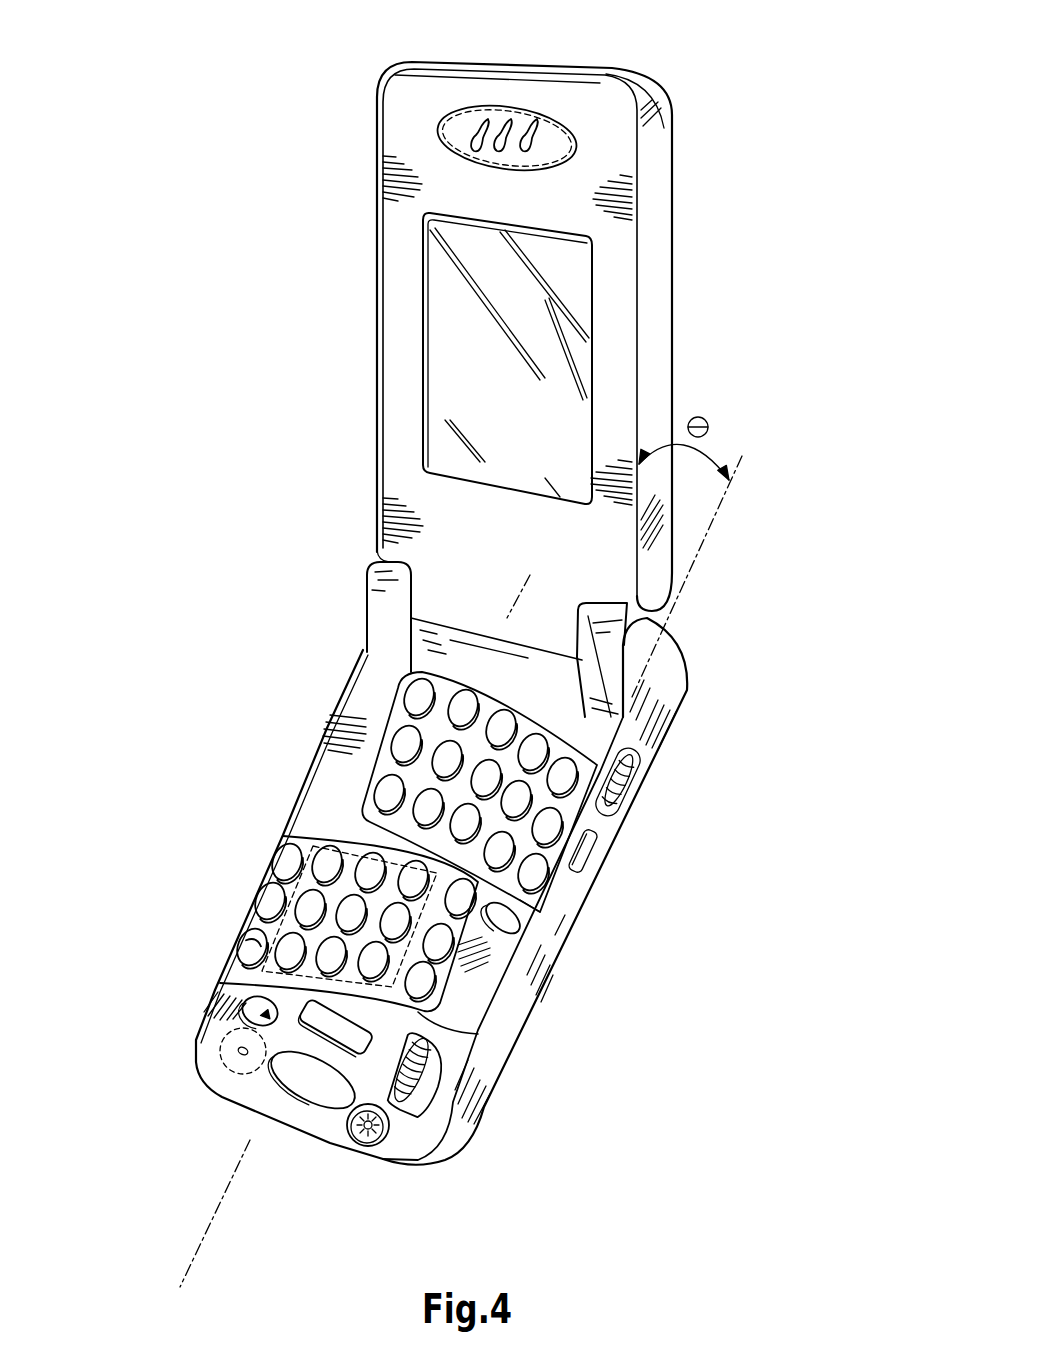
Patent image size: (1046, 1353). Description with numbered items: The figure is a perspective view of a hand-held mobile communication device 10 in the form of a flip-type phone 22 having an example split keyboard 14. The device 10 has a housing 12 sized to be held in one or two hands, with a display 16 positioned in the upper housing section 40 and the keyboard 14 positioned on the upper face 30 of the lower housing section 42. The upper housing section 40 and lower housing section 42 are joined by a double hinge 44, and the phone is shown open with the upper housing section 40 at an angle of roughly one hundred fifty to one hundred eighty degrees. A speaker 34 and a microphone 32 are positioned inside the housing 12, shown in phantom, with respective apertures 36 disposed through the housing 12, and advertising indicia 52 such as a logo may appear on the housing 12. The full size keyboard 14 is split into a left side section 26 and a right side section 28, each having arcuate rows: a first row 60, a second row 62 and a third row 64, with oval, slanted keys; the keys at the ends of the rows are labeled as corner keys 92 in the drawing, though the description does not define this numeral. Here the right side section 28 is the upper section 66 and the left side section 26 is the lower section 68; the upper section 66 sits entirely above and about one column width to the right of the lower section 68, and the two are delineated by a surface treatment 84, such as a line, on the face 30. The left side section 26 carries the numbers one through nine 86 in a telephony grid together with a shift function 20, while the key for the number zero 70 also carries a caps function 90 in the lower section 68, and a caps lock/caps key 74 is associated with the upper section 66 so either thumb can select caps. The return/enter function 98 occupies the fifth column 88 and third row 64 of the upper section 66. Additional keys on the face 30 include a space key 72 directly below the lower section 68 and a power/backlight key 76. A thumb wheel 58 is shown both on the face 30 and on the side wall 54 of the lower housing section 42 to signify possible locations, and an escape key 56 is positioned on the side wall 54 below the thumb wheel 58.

The mobile communication device 10 is at (750, 46).
The housing 12 is at (692, 665).
The keyboard 14 is at (358, 770).
The display 16 is at (556, 356).
The shift function 20 is at (240, 952).
The flip-type phone 22 is at (712, 372).
The left side section 26 is at (273, 877).
The right side section 28 is at (553, 848).
The upper face 30 is at (452, 1020).
The microphone 32 is at (222, 1052).
The speaker 34 is at (528, 110).
The apertures 36 is at (480, 147).
The upper housing section 40 is at (664, 112).
The lower housing section 42 is at (657, 748).
The hinge 44 is at (378, 580).
The advertising indicia 52 is at (325, 1088).
The side wall 54 is at (552, 928).
The escape key 56 is at (595, 857).
The thumb wheel 58 is at (624, 790).
The first row 60 is at (400, 695).
The second row 62 is at (393, 740).
The third row 64 is at (380, 773).
The upper section 66 is at (582, 728).
The lower section 68 is at (464, 998).
The key associated with the number "0" 70 is at (243, 1012).
The space key 72 is at (285, 1022).
The caps lock/caps key 74 is at (550, 958).
The power/backlight key 76 is at (370, 1142).
The surface treatment 84 is at (405, 668).
The numbers "1-9" 86 is at (400, 957).
The fifth column 88 is at (603, 923).
The caps key 90 is at (247, 985).
The corner key 92 is at (428, 684).
The return/enter function 98 is at (540, 874).